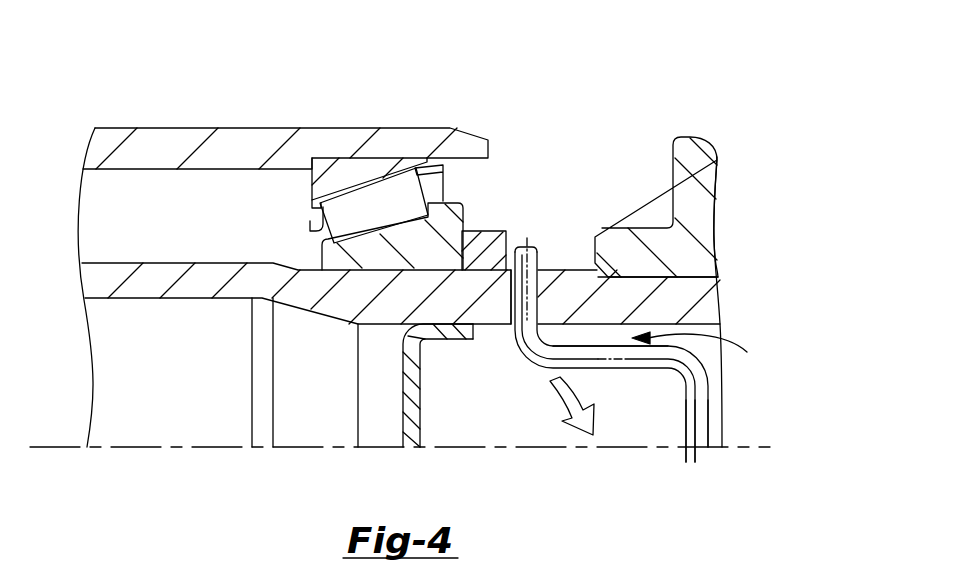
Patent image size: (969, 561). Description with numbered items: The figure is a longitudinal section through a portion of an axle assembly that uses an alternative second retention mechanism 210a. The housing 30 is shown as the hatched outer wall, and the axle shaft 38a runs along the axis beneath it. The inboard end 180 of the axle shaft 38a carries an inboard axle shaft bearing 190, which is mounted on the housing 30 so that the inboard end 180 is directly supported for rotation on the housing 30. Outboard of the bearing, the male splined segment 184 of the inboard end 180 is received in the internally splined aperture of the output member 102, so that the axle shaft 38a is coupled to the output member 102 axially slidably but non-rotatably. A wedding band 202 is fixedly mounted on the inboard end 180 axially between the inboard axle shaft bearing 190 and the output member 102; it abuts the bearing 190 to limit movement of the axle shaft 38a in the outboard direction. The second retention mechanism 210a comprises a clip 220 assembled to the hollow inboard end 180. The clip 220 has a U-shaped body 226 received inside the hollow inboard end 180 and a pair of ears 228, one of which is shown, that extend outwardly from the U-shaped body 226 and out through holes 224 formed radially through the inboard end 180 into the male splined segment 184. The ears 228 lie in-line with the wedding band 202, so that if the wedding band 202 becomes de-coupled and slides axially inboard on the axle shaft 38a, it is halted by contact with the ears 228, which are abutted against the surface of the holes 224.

The housing 30 is at (143, 142).
The inboard axle shaft bearing 190 is at (337, 172).
The wedding band 202 is at (473, 243).
The ears 228 is at (534, 246).
The output member 102 is at (636, 241).
The clip 220 is at (586, 349).
The male splined segment 184 is at (690, 280).
The axle shaft 38a is at (137, 290).
The inboard end 180 is at (203, 282).
The holes 224 is at (512, 330).
The second retention mechanism 210a is at (714, 354).
The U-shaped body 226 is at (628, 363).